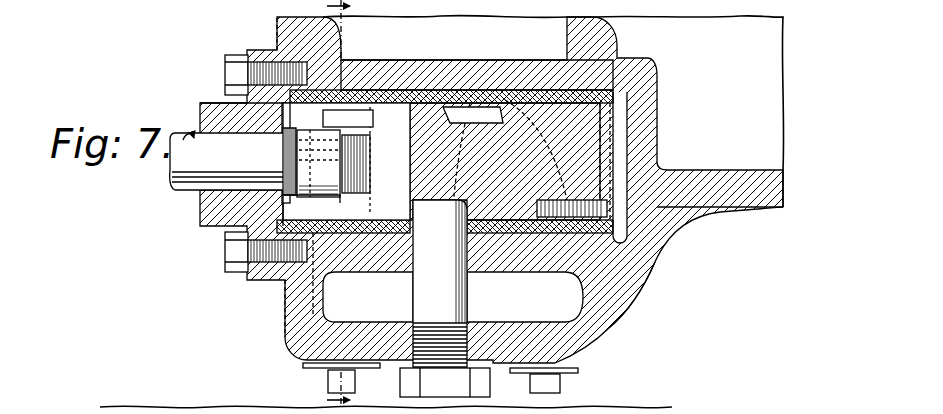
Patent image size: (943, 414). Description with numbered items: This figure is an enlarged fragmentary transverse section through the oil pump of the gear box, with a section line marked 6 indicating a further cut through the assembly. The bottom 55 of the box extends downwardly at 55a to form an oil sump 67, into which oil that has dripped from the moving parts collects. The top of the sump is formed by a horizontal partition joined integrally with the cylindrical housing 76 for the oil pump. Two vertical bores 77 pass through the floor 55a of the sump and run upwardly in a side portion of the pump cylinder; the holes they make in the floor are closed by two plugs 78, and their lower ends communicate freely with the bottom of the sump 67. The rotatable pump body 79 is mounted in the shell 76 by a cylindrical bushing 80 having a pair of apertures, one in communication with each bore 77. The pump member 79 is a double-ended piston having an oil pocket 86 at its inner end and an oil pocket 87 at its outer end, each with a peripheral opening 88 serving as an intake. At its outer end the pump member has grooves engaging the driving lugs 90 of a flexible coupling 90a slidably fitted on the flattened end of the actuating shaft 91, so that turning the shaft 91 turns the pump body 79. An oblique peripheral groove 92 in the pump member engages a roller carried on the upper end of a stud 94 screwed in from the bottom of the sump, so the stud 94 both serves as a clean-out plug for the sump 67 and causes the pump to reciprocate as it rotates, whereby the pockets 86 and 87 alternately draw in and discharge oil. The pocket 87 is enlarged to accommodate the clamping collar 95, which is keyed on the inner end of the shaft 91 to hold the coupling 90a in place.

The bottom of the box 55 is at (737, 170).
The downwardly extending bottom floor 55a is at (617, 307).
The oil sump 67 is at (537, 277).
The cylindrical housing 76 is at (453, 63).
The vertical bores 77 is at (373, 125).
The plugs 78 is at (328, 380).
The rotatable pump body 79 is at (410, 100).
The cylindrical bushing 80 is at (473, 93).
The oil pocket 86 is at (595, 212).
The oil pocket 87 is at (372, 176).
The peripheral opening 88 is at (353, 96).
The driving lugs 90 is at (302, 160).
The flexible coupling 90a is at (347, 208).
The rotatable actuating shaft 91 is at (203, 122).
The peripheral groove 92 is at (455, 119).
The stud 94 is at (347, 276).
The clamping collar 95 is at (370, 153).
The section line 6 is at (329, 205).